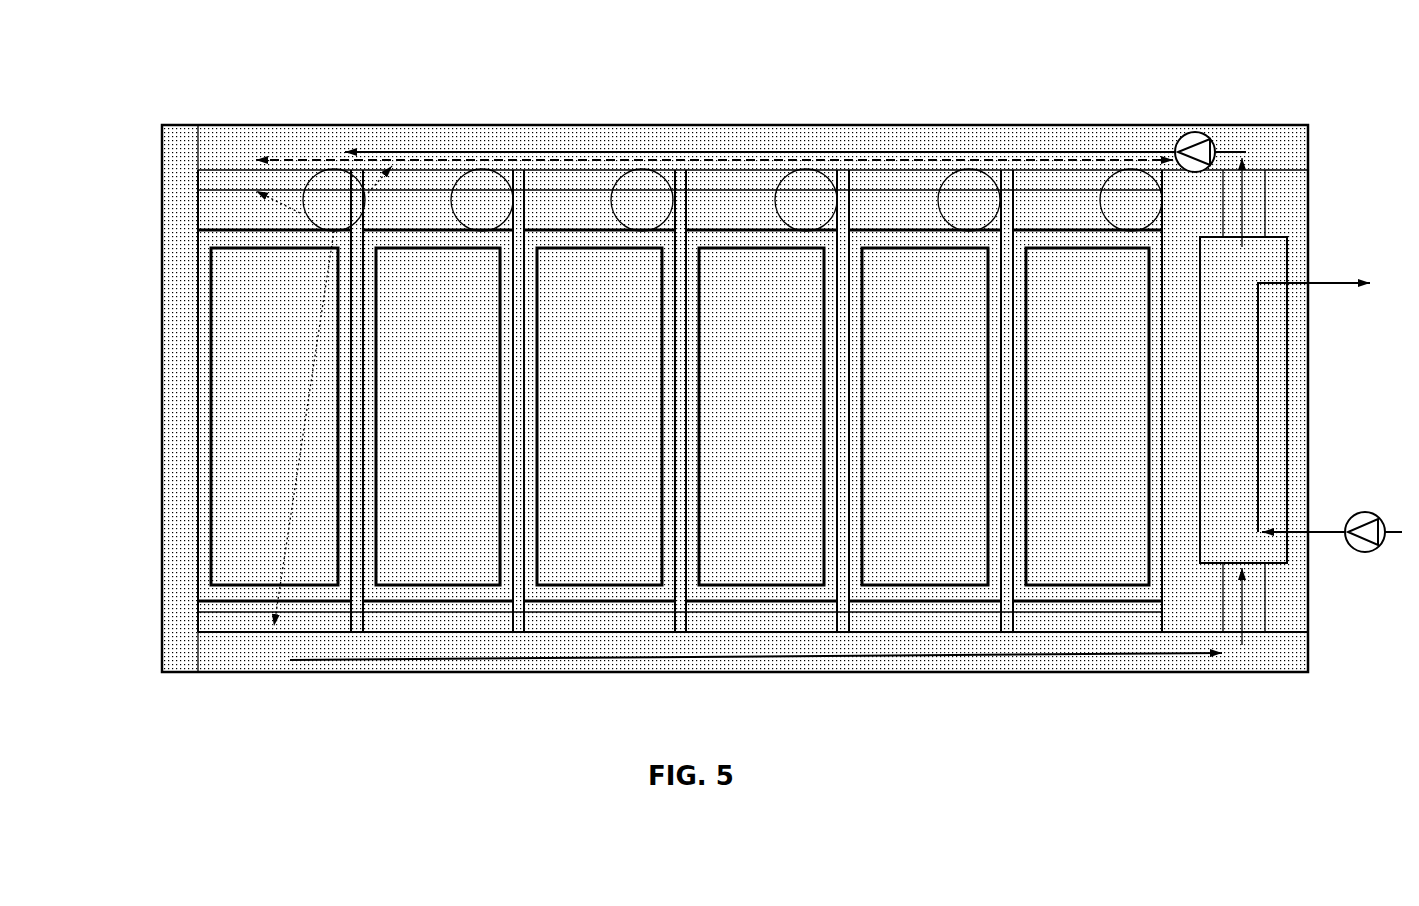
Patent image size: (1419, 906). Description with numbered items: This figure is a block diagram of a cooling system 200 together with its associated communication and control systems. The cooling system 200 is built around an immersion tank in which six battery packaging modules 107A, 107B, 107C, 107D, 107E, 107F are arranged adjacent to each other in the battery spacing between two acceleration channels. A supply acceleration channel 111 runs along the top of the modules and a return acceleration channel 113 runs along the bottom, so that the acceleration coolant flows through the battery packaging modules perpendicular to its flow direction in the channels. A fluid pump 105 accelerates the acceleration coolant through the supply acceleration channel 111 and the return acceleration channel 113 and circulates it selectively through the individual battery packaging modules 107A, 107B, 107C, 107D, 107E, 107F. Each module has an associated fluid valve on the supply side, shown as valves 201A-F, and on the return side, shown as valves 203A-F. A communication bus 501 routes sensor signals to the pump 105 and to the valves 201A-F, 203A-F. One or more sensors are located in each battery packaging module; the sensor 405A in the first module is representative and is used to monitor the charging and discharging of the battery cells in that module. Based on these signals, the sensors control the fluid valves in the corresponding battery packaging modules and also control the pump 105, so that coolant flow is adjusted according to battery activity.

The cooling system 200 is at (752, 354).
The valves 201A-F is at (195, 188).
The valves 203A-F is at (195, 622).
The supply acceleration channel 111 is at (470, 150).
The communication bus 501 is at (257, 158).
The sensor 405A is at (312, 176).
The battery packaging module 107A is at (300, 386).
The battery packaging module 107B is at (460, 386).
The battery packaging module 107C is at (618, 386).
The battery packaging module 107D is at (788, 386).
The battery packaging module 107E is at (946, 386).
The battery packaging module 107F is at (1106, 386).
The fluid pump 105 is at (1190, 134).
The return acceleration channel 113 is at (330, 664).